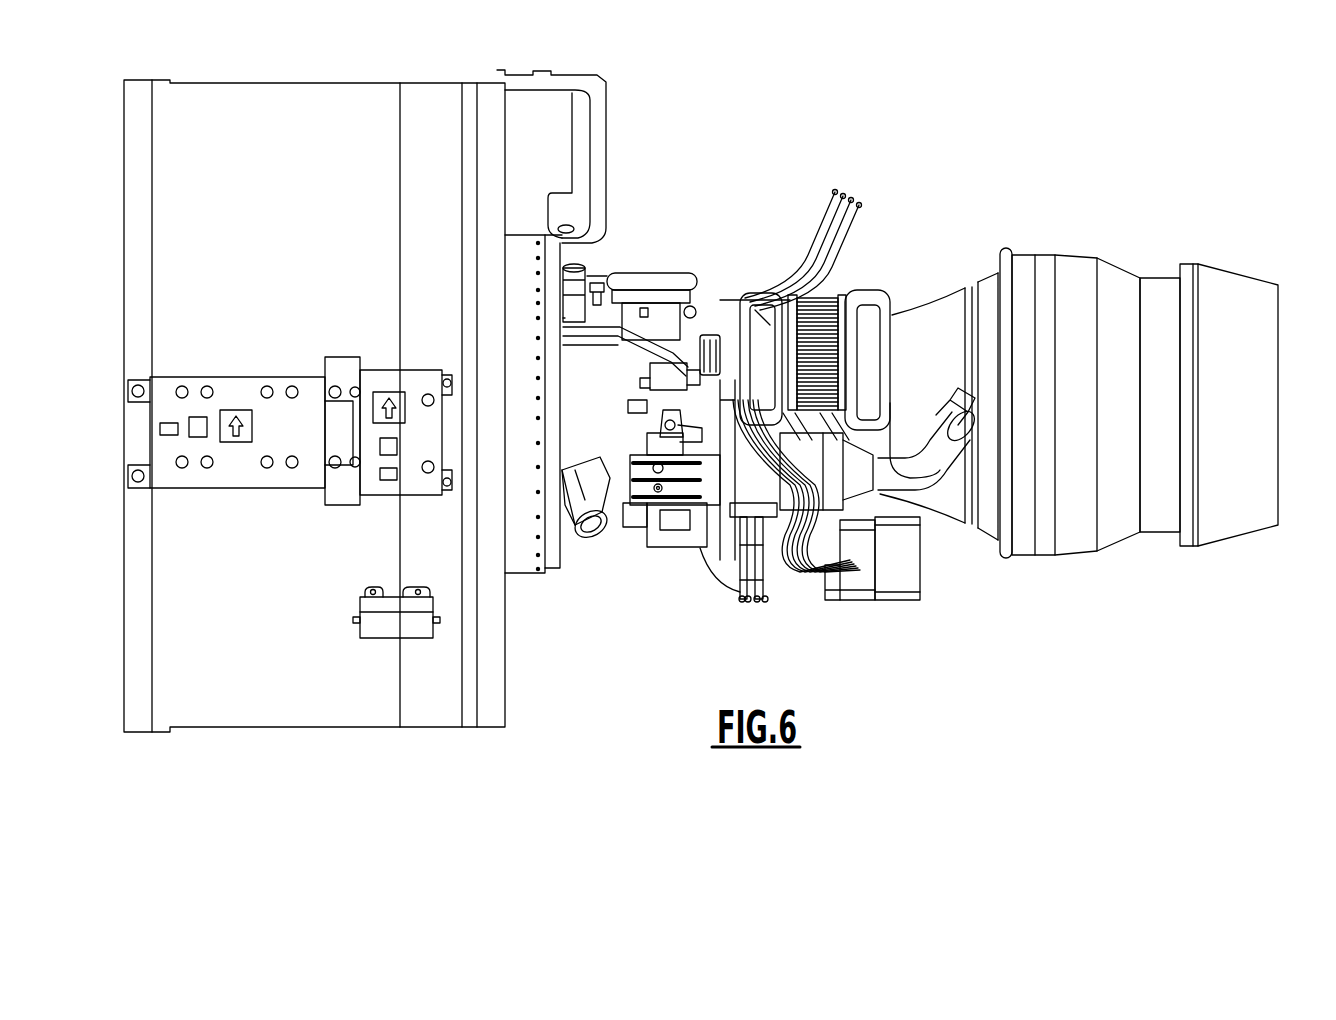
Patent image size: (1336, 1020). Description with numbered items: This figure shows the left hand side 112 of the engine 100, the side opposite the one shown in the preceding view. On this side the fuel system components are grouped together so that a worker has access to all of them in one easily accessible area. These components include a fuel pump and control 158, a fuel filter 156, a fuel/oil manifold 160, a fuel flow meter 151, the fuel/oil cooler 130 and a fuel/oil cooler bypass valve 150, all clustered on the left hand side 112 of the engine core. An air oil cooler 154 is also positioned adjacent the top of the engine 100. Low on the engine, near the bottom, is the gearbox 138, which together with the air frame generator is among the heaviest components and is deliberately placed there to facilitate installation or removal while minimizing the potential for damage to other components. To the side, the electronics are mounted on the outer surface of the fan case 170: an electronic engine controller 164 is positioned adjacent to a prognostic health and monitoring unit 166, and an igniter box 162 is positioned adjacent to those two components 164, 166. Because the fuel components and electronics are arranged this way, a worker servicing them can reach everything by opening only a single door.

The engine 100 is at (935, 122).
The left hand side 112 is at (1024, 135).
The fuel/oil cooler 130 is at (655, 295).
The gearbox 138 is at (760, 572).
The fuel/oil cooler bypass valve 150 is at (597, 277).
The fuel flow meter 151 is at (673, 372).
The air oil cooler 154 is at (827, 323).
The fuel filter 156 is at (665, 527).
The fuel pump and control 158 is at (650, 477).
The fuel/oil manifold 160 is at (800, 510).
The igniter box 162 is at (390, 625).
The electronic engine controller 164 is at (239, 457).
The prognostic health and monitoring unit 166 is at (413, 430).
The fan case 170 is at (263, 107).